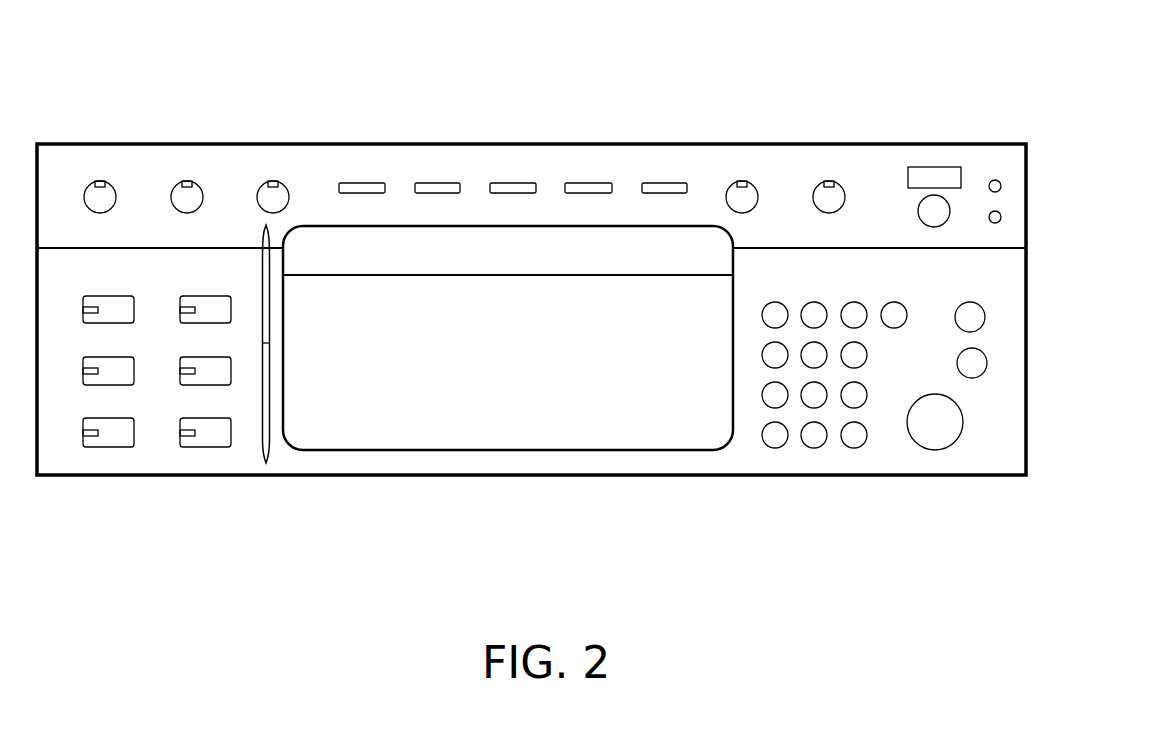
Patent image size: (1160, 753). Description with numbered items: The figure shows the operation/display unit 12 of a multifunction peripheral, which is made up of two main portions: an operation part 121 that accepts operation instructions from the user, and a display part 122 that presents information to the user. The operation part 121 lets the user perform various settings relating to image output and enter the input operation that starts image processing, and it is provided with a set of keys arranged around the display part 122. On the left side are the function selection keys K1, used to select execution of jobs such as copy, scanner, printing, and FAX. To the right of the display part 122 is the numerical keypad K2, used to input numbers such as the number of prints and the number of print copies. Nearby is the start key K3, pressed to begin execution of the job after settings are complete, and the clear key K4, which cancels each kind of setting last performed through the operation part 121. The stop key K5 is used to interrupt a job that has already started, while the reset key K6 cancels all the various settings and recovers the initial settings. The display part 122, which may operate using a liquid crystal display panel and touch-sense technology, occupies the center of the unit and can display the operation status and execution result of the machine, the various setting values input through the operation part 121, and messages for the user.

The operation/display unit 12 is at (628, 100).
The operation part 121 is at (1010, 270).
The display part 122 is at (532, 423).
The function selection keys K1 is at (152, 458).
The numerical keypad K2 is at (812, 458).
The start key K3 is at (930, 440).
The clear key K4 is at (893, 328).
The stop key K5 is at (982, 366).
The reset key K6 is at (982, 318).